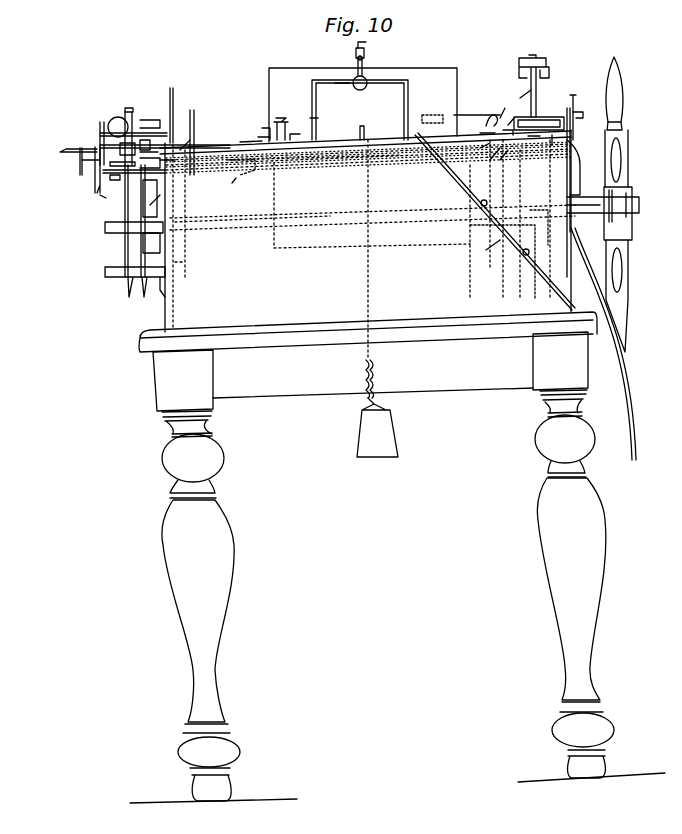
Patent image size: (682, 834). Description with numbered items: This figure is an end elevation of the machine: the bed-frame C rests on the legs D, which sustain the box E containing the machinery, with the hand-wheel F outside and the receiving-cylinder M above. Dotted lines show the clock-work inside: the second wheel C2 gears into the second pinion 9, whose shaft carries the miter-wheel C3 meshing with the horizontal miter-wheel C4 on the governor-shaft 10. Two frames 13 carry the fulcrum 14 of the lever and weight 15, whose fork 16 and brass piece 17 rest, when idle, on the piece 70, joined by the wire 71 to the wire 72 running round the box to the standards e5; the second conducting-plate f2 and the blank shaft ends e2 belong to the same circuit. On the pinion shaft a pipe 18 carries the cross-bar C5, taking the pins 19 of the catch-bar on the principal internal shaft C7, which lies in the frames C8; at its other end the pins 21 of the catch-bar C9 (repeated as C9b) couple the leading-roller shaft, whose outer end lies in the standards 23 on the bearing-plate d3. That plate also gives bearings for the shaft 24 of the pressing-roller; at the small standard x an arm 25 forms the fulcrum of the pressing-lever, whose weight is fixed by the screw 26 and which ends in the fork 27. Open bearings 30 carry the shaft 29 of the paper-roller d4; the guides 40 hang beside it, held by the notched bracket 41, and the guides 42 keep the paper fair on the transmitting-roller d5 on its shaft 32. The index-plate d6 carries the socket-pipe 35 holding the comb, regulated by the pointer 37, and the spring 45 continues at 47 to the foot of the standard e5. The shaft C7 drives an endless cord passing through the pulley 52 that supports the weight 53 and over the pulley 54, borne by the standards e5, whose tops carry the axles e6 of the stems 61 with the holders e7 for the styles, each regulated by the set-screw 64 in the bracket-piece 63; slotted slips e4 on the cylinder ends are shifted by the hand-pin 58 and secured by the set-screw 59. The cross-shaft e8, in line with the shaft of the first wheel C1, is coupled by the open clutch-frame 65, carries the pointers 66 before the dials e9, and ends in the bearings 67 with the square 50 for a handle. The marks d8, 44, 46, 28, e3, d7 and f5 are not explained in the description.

The bed-frame C is at (368, 361).
The legs D is at (397, 596).
The box E is at (367, 231).
The receiving-cylinder M is at (360, 110).
The hand-wheel F is at (603, 204).
The slotted steel slips e4 is at (269, 110).
The standards e5 is at (376, 104).
The axles e6 is at (341, 73).
The stems 61 is at (363, 72).
The bracket-piece 63 is at (356, 53).
The set-screw 64 is at (366, 43).
The holders e7 is at (364, 57).
The pulley 54 is at (370, 130).
The post d8 is at (288, 129).
The bracket 44 is at (301, 136).
The guide and set-screw 59 is at (260, 127).
The hand-pin 58 is at (259, 131).
The spring continuation 47 is at (244, 140).
The pulley 52 is at (366, 362).
The weight 53 is at (377, 427).
The pointer 66 is at (175, 206).
The open clutch-frame 65 is at (495, 222).
The catch-bar C9 is at (490, 252).
The second wheel C2 is at (542, 198).
The wire 72 is at (519, 70).
The wire 71 is at (520, 91).
The horizontal miter-wheel C4 is at (540, 117).
The lever and weight 15 is at (477, 108).
The fulcrum 14 is at (490, 113).
The frames 13 is at (505, 105).
The fork arms 16 is at (516, 113).
The pins 19 is at (503, 146).
The pipe 18 is at (496, 164).
The principal internal shaft C7 is at (495, 157).
The cross-bar C5 is at (482, 123).
The miter-wheel C3 is at (532, 130).
The second pinion 9 is at (548, 136).
The blank ends of cylinder-shafts e2 is at (479, 147).
The second conducting-plate f2 is at (574, 108).
The piece of brass 17 is at (582, 120).
The piece 70 is at (580, 145).
The first wheel C1 is at (583, 196).
The flexible shaft f5 is at (610, 396).
The pointer 37 is at (170, 104).
The index-plate standard d6 is at (190, 135).
The screw 26 is at (129, 103).
The paper-roller d4 is at (138, 131).
The shaft 24 is at (116, 124).
The socket-pipe 35 is at (150, 119).
The arm 25 is at (170, 133).
The standards 23 is at (180, 140).
The pins 21 is at (165, 146).
The frames C8 is at (205, 139).
The spring 45 is at (120, 147).
The transmitting-roller d5 is at (145, 137).
The shaft 32 is at (110, 156).
The open bearings 30 is at (88, 161).
The guides 42 is at (120, 159).
The fork 27 is at (150, 162).
The rail 46 is at (134, 168).
The governor-shaft 10 is at (177, 156).
The frame member C9b is at (189, 153).
The shaft 29 is at (95, 175).
The block 28 is at (149, 198).
The bearing-plate d3 is at (98, 199).
The partition e3 is at (242, 169).
The arm d7 is at (231, 188).
The bearings 67 is at (158, 223).
The cross-shaft e8 is at (320, 214).
The square 50 is at (134, 224).
The guides 40 is at (141, 258).
The dials e9 is at (178, 261).
The bracket 41 is at (132, 282).
The screw x is at (179, 128).